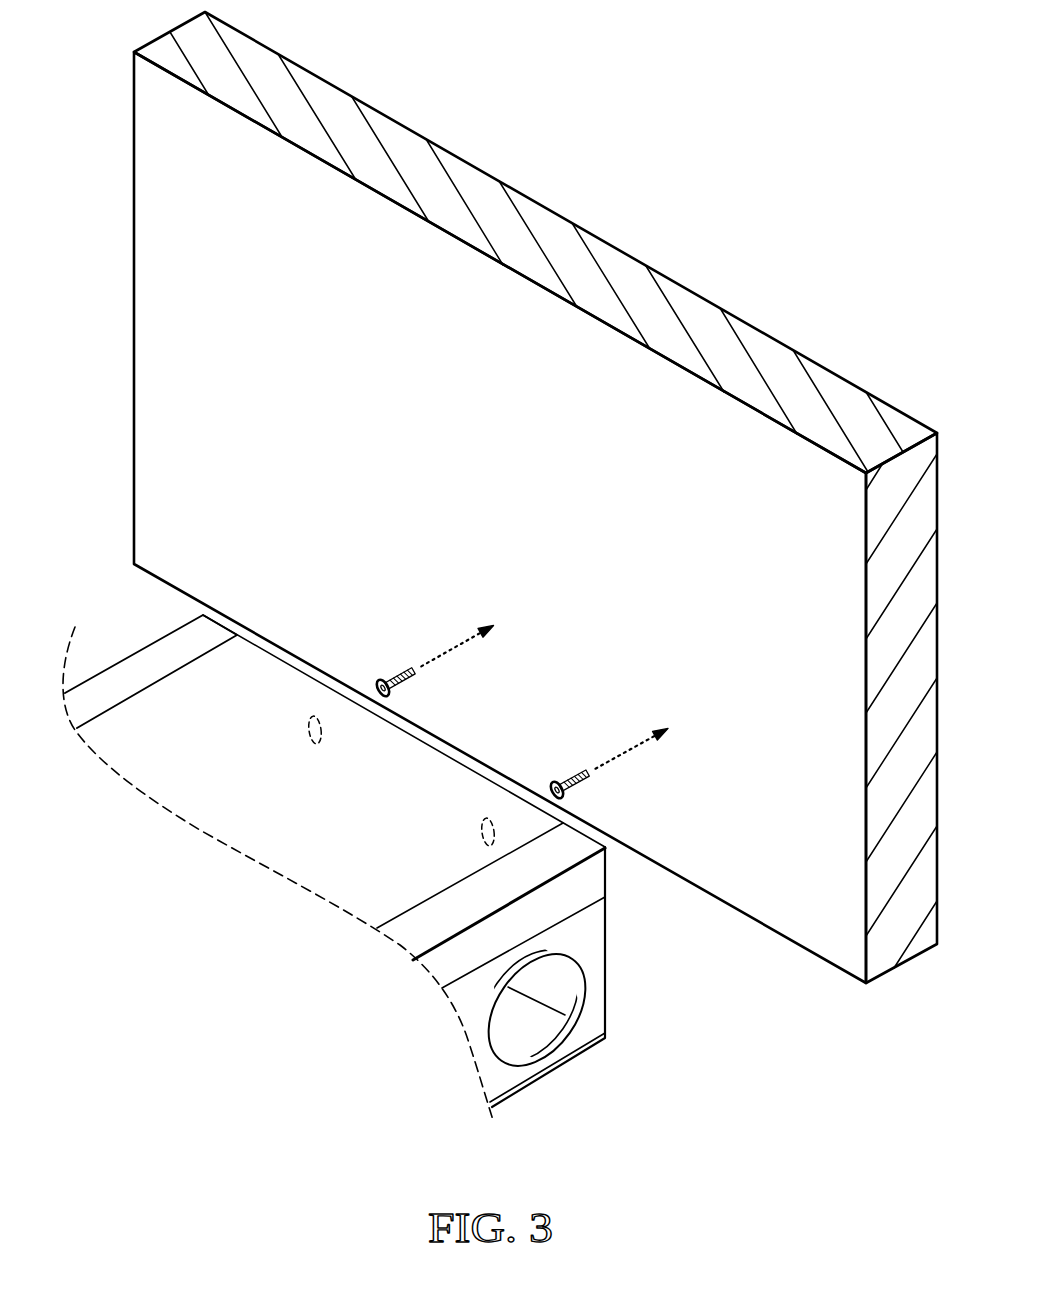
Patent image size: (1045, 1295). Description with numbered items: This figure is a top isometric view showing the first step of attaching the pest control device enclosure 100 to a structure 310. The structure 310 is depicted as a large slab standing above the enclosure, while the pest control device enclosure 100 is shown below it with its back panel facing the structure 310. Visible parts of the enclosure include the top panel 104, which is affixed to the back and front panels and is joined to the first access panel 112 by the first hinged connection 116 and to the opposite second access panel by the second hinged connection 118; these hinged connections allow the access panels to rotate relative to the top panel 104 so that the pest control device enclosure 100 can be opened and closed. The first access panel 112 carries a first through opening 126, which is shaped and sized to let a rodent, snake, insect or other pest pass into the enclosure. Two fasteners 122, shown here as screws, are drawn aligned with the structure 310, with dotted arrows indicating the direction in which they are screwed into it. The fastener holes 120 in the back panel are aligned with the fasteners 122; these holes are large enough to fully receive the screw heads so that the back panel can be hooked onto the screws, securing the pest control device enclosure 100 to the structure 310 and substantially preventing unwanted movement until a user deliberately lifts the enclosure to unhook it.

The pest control device enclosure 100 is at (372, 860).
The top panel 104 is at (140, 752).
The first access panel 112 is at (527, 965).
The first hinged connection 116 is at (540, 887).
The second hinged connection 118 is at (168, 634).
The fastener holes 120 is at (480, 833).
The fasteners 122 is at (626, 820).
The first through opening 126 is at (498, 993).
The structure 310 is at (480, 165).